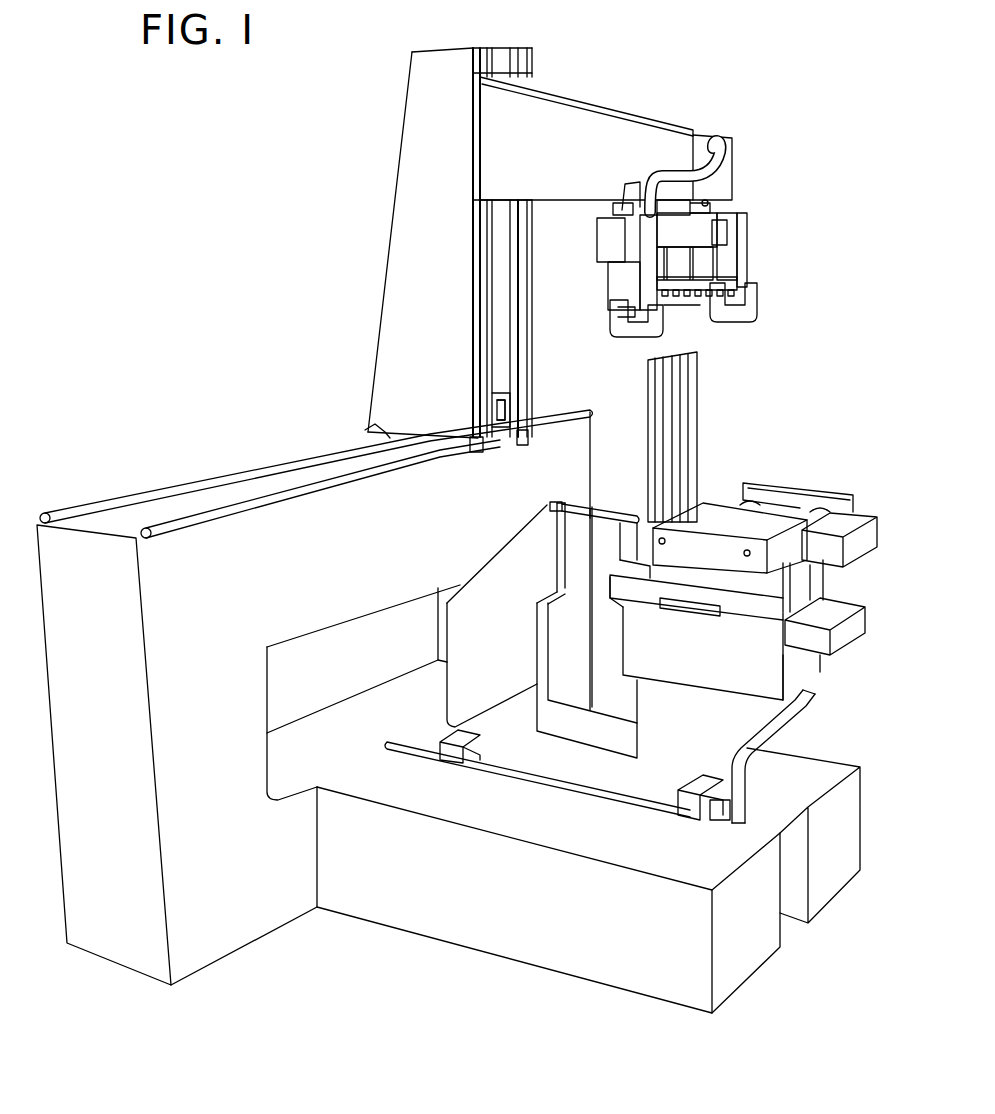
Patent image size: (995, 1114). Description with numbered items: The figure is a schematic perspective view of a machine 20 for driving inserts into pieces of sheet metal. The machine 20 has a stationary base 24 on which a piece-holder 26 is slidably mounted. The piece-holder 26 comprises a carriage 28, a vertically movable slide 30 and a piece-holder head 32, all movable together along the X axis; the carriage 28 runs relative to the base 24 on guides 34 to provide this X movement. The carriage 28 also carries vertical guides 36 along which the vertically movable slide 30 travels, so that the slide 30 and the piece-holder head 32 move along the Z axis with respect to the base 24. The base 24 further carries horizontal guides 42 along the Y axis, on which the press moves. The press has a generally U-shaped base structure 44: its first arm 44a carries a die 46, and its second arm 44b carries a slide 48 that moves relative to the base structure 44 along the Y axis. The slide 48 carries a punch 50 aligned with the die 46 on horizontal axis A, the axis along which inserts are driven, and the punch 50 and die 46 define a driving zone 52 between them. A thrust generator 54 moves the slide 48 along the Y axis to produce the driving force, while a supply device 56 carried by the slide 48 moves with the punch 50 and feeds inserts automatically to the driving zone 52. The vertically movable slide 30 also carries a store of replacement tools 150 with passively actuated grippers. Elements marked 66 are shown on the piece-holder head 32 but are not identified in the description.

The machine 20 is at (366, 164).
The stationary base 24 is at (356, 876).
The piece-holder 26 is at (592, 78).
The carriage 28 is at (412, 242).
The vertically movable slide 30 is at (622, 132).
The piece-holder head 32 is at (750, 232).
The guides 34 is at (312, 462).
The guides 36 is at (482, 362).
The guides 42 is at (612, 793).
The base structure 44 is at (770, 767).
The first arm 44a is at (468, 650).
The second arm 44b is at (738, 712).
The die 46 is at (578, 515).
The slide 48 is at (662, 527).
The punch 50 is at (616, 514).
The driving zone 52 is at (597, 495).
The thrust generator 54 is at (840, 613).
The supply device 56 is at (726, 468).
The clamps 66 is at (604, 284).
The store of replacement tools 150 is at (688, 312).